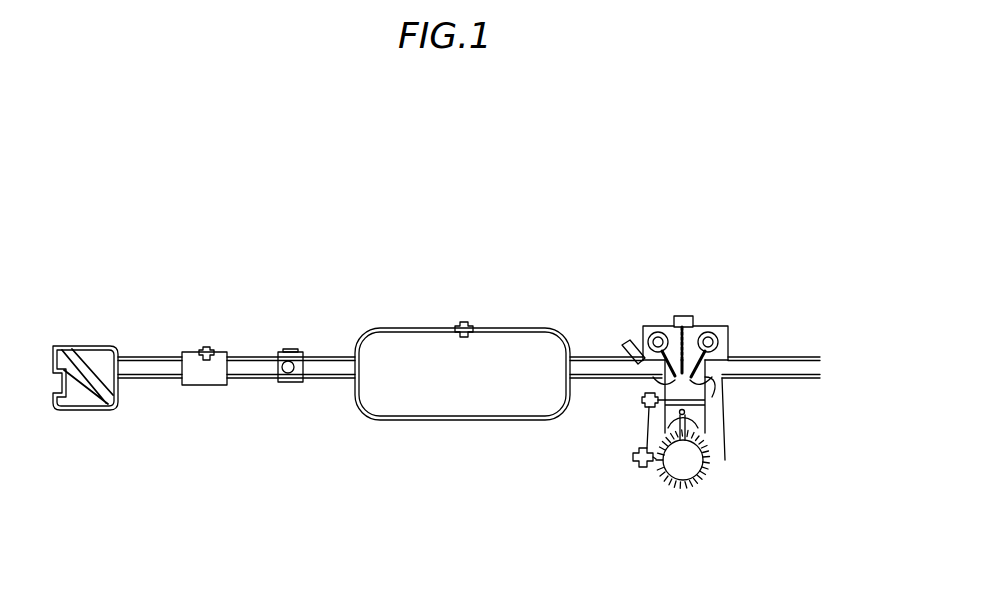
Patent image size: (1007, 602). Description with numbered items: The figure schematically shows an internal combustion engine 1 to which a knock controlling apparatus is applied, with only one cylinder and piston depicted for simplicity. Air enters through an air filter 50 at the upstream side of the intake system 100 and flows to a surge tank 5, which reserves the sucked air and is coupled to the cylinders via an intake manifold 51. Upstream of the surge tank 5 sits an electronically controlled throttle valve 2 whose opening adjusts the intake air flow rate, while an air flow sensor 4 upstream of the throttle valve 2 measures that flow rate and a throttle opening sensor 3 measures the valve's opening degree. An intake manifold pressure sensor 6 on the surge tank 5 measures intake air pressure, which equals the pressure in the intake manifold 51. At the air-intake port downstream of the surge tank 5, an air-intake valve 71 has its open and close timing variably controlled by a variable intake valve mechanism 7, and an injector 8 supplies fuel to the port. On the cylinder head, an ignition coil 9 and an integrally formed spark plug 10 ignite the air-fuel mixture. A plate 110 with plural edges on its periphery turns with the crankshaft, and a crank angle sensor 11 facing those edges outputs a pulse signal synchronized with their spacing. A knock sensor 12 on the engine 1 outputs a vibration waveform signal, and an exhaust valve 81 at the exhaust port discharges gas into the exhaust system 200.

The internal combustion engine 1 is at (729, 416).
The electronically controlled throttle valve 2 is at (291, 409).
The throttle opening sensor 3 is at (306, 327).
The air flow sensor 4 is at (218, 331).
The surge tank 5 is at (462, 411).
The intake manifold pressure sensor 6 is at (483, 292).
The variable intake valve mechanism 7 is at (650, 350).
The injector 8 is at (611, 317).
The ignition coil 9 is at (680, 318).
The spark plug 10 is at (719, 339).
The crank angle sensor 11 is at (609, 475).
The knock sensor 12 is at (608, 436).
The air filter 50 is at (104, 343).
The intake manifold 51 is at (590, 354).
The air-intake valve 71 is at (642, 398).
The exhaust valve 81 is at (710, 381).
The intake system 100 is at (163, 404).
The plate 110 is at (717, 472).
The exhaust system 200 is at (773, 357).